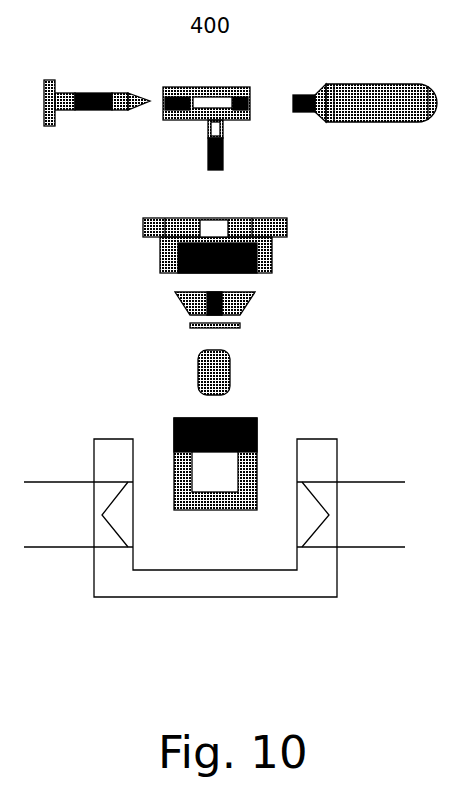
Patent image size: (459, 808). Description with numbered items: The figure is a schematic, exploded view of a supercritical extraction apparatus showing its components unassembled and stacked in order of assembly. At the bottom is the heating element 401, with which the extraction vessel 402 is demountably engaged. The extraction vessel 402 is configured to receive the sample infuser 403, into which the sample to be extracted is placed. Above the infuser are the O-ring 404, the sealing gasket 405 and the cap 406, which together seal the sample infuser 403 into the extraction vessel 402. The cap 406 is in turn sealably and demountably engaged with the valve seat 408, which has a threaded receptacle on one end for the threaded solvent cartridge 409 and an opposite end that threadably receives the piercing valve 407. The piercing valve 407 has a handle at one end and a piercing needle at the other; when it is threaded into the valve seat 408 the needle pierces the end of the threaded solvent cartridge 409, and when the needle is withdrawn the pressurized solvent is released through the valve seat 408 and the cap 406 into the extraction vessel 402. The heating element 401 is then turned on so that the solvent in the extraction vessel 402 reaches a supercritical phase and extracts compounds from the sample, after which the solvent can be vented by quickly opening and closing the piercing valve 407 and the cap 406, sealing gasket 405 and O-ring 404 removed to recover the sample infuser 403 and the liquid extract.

The heating element 401 is at (312, 583).
The extraction vessel 402 is at (255, 460).
The sample infuser 403 is at (225, 370).
The O-ring 404 is at (240, 323).
The sealing gasket 405 is at (180, 305).
The cap 406 is at (272, 257).
The piercing valve 407 is at (112, 108).
The valve seat 408 is at (232, 118).
The threaded solvent cartridge 409 is at (355, 112).